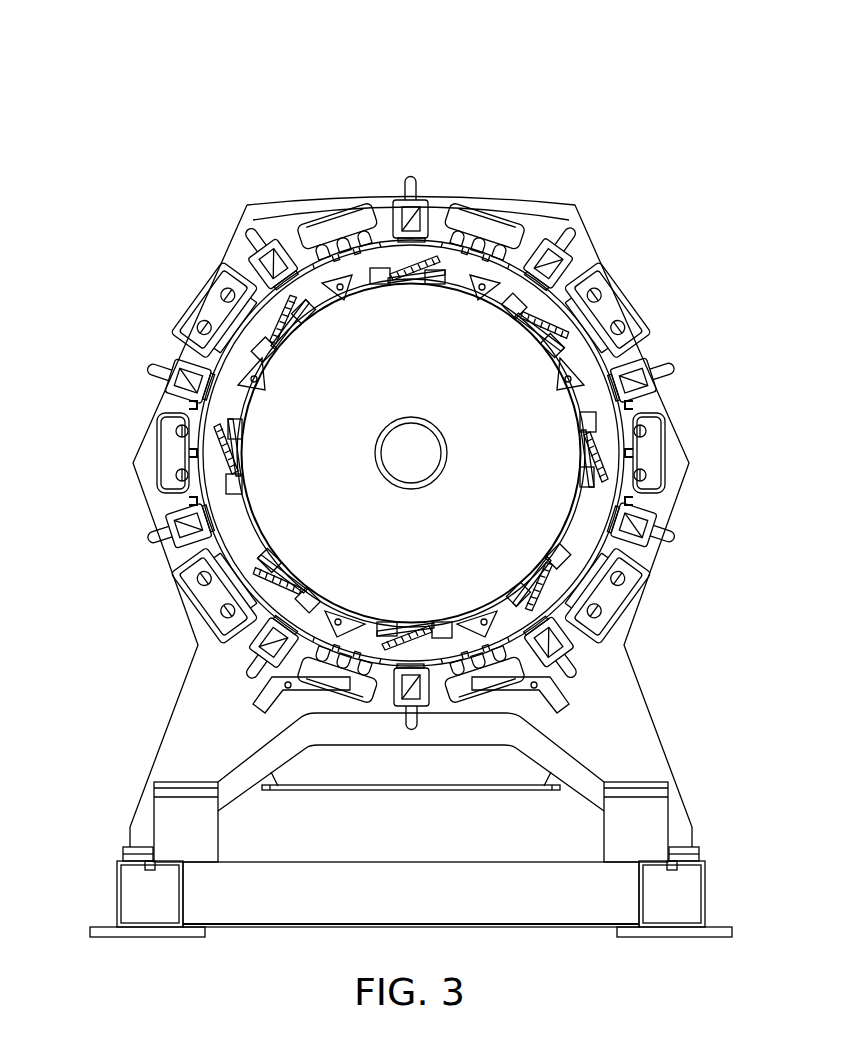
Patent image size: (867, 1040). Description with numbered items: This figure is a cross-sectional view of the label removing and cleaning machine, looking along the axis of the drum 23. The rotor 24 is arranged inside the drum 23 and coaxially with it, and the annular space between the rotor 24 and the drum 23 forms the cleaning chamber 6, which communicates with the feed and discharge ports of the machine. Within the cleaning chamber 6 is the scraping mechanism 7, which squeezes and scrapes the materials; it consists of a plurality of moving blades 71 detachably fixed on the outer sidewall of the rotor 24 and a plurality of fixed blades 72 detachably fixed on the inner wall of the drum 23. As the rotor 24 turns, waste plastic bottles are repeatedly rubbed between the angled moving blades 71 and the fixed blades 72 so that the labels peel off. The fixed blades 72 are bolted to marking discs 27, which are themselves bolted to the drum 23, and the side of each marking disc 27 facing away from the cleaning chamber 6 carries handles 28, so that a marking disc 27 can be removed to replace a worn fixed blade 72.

The cleaning chamber 6 is at (414, 371).
The scraping mechanism 7 is at (406, 148).
The moving blades 71 is at (428, 260).
The fixed blades 72 is at (363, 225).
The drum 23 is at (648, 410).
The rotor 24 is at (525, 415).
The marking discs 27 is at (197, 560).
The handles 28 is at (210, 598).